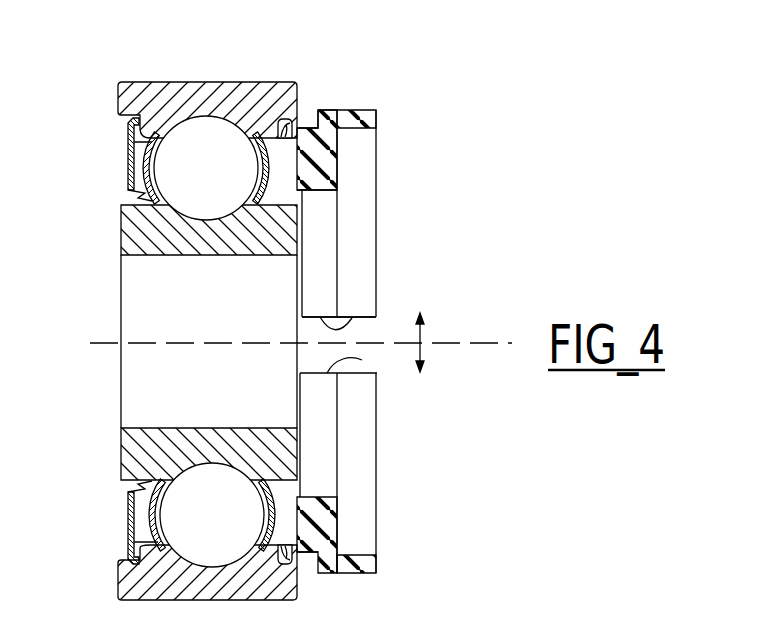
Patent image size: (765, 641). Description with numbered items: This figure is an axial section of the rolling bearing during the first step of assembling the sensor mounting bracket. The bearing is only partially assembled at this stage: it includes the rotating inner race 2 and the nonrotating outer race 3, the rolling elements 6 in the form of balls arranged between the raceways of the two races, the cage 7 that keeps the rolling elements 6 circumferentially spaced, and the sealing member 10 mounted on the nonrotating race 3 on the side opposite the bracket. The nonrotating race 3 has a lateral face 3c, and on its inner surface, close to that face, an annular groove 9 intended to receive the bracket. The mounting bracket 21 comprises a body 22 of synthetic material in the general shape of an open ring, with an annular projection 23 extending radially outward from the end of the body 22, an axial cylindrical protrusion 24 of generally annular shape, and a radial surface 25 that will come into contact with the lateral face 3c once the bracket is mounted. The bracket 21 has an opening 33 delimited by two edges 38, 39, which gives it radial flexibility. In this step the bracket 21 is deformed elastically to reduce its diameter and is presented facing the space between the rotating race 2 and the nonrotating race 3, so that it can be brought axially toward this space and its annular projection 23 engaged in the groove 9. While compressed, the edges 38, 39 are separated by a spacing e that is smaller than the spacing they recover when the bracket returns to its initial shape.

The rotating inner race 2 is at (125, 233).
The nonrotating outer race 3 is at (133, 95).
The lateral face 3c is at (300, 128).
The rolling elements 6 is at (223, 133).
The cage 7 is at (156, 140).
The second annular groove 9 is at (281, 122).
The sealing member 10 is at (128, 155).
The mounting bracket 21 is at (340, 158).
The body 22 is at (337, 189).
The annular projection 23 is at (307, 115).
The axial cylindrical protrusion 24 is at (377, 117).
The radial surface 25 is at (314, 104).
The opening 33 is at (365, 327).
The edge 38 is at (362, 326).
The edge 39 is at (362, 360).
The spacing e is at (430, 342).